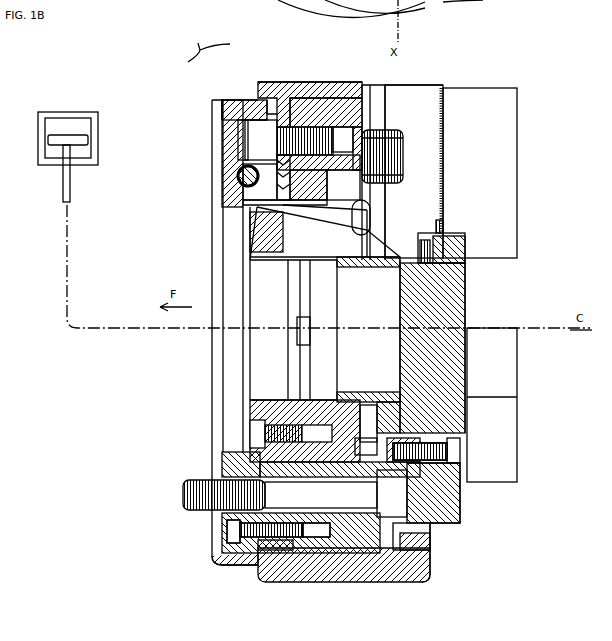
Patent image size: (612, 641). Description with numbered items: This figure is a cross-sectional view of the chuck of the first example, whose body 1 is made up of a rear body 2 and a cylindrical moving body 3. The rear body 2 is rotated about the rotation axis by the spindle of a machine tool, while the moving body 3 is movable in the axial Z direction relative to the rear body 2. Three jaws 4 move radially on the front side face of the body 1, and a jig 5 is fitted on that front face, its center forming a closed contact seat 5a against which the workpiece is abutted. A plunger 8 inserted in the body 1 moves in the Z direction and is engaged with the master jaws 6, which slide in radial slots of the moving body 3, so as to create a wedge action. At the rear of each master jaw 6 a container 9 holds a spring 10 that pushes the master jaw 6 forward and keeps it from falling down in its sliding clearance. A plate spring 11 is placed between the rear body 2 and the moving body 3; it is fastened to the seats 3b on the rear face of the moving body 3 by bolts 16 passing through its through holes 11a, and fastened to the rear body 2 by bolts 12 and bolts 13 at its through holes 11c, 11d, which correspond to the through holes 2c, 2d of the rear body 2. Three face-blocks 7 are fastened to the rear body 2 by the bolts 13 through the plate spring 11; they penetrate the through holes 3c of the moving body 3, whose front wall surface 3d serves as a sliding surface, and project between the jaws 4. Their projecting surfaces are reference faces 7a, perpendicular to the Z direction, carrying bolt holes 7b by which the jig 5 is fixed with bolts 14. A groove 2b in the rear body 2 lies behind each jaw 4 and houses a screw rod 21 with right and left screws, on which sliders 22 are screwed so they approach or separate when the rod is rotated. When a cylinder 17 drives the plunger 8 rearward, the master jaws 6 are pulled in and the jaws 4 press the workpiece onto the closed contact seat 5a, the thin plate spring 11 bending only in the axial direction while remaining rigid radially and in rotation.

The body 1 is at (209, 46).
The rear body 2 is at (212, 98).
The groove 2b is at (243, 118).
The through hole 2c is at (235, 466).
The through hole 2d is at (216, 562).
The moving body 3 is at (258, 85).
The seat 3b is at (320, 82).
The through hole 3c is at (360, 575).
The wall surface 3d is at (422, 582).
The jaw 4 is at (517, 128).
The jig 5 is at (450, 292).
The closed contact seat 5a is at (465, 312).
The master jaw 6 is at (443, 86).
The face-block 7 is at (430, 552).
The reference face 7a is at (432, 544).
The bolt hole 7b is at (440, 487).
The plunger 8 is at (265, 230).
The container 9 is at (385, 86).
The spring 10 is at (400, 182).
The plate spring 11 is at (288, 82).
The through hole 11a is at (243, 208).
The through hole 11c is at (262, 548).
The through hole 11d is at (292, 565).
The bolt 12 is at (237, 530).
The bolt 13 is at (407, 497).
The bolt 14 is at (484, 3).
The bolt 16 is at (238, 178).
The cylinder 17 is at (98, 112).
The screw rod 21 is at (248, 170).
The slider 22 is at (262, 146).